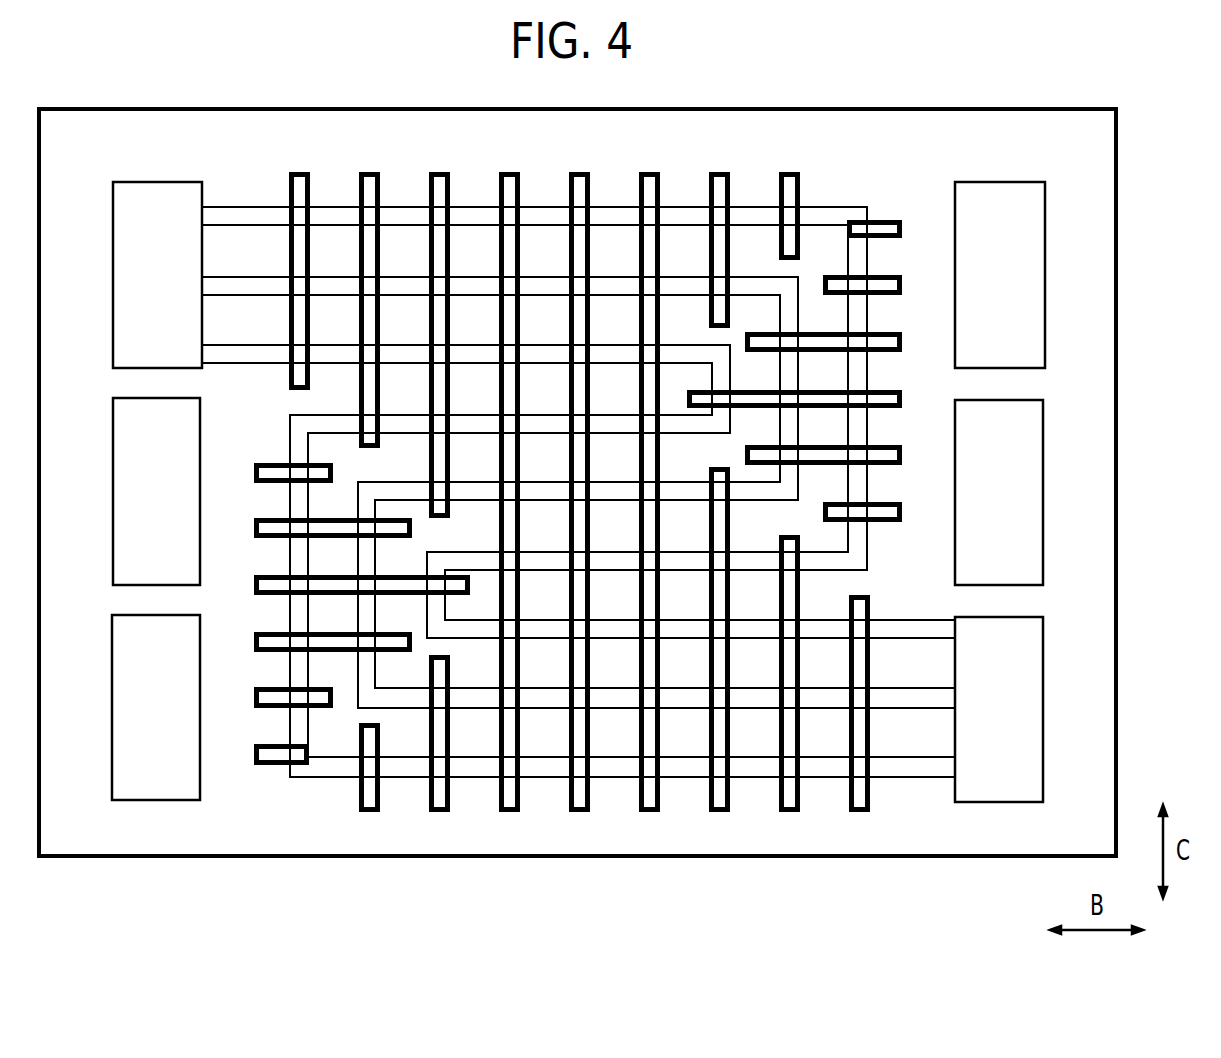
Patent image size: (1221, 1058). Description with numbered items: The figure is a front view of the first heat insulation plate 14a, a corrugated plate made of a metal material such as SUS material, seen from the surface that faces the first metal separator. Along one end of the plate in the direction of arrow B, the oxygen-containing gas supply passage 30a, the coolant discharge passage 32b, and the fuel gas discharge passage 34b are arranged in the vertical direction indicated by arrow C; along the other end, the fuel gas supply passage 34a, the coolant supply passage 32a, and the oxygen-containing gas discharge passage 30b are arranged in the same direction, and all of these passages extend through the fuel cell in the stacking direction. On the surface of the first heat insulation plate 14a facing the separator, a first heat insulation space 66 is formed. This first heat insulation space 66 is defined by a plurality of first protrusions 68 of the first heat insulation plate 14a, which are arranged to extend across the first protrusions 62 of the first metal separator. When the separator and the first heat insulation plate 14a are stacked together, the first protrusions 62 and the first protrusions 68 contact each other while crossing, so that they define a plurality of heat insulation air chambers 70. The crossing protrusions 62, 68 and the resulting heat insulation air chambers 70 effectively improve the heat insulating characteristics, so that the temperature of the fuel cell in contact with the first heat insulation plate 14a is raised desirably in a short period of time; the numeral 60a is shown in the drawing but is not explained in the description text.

The first heat insulation plate 14a is at (262, 47).
The oxygen-containing gas supply passage 30a is at (157, 275).
The oxygen-containing gas discharge passage 30b is at (999, 709).
The coolant supply passage 32a is at (999, 492).
The coolant discharge passage 32b is at (156, 491).
The fuel gas supply passage 34a is at (1000, 275).
The fuel gas discharge passage 34b is at (156, 707).
The wiring layer 60a is at (820, 218).
The first protrusions of the first metal separator 62 is at (540, 237).
The first heat insulation space 66 is at (453, 153).
The first protrusions of the first heat insulation plate 68 is at (647, 180).
The heat insulation air chambers 70 is at (330, 290).